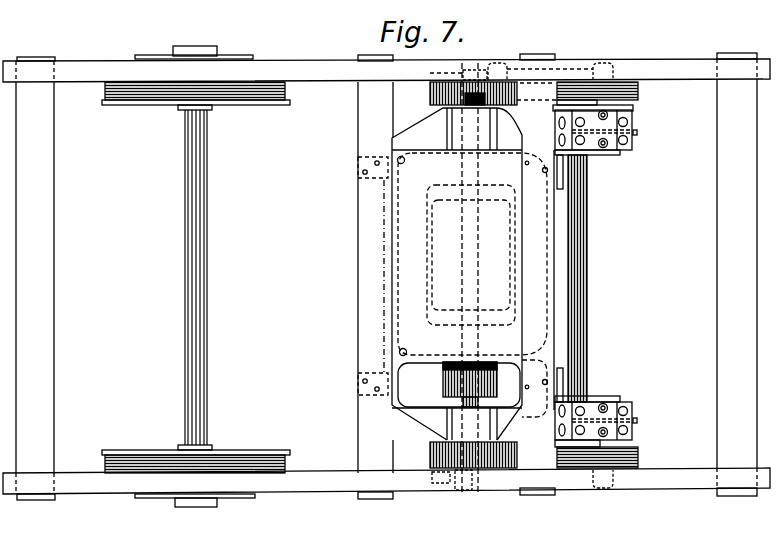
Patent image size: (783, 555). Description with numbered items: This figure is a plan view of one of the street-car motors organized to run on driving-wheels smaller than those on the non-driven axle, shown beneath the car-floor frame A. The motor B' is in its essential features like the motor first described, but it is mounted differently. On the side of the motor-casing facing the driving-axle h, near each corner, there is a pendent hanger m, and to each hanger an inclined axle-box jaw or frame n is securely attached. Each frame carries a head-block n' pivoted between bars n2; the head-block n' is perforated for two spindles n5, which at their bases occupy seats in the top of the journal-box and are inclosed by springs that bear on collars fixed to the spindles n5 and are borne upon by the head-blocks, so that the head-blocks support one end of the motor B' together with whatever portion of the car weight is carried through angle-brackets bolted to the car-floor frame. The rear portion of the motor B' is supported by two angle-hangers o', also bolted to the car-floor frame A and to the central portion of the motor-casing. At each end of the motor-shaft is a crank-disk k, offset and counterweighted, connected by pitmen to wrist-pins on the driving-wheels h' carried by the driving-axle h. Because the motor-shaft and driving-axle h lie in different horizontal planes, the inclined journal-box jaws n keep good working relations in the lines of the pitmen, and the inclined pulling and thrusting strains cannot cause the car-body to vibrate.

The truck frame A is at (386, 277).
The motor B' is at (473, 277).
The crank-disk k is at (450, 92).
The driving-axle h is at (585, 278).
The driving-wheel h' is at (582, 275).
The pendent hanger m is at (562, 168).
The inclined axle-box jaw or frame n is at (605, 273).
The head-block n' is at (619, 274).
The bars n2 is at (582, 145).
The spindles n5 is at (608, 112).
The angle-hanger o' is at (359, 271).